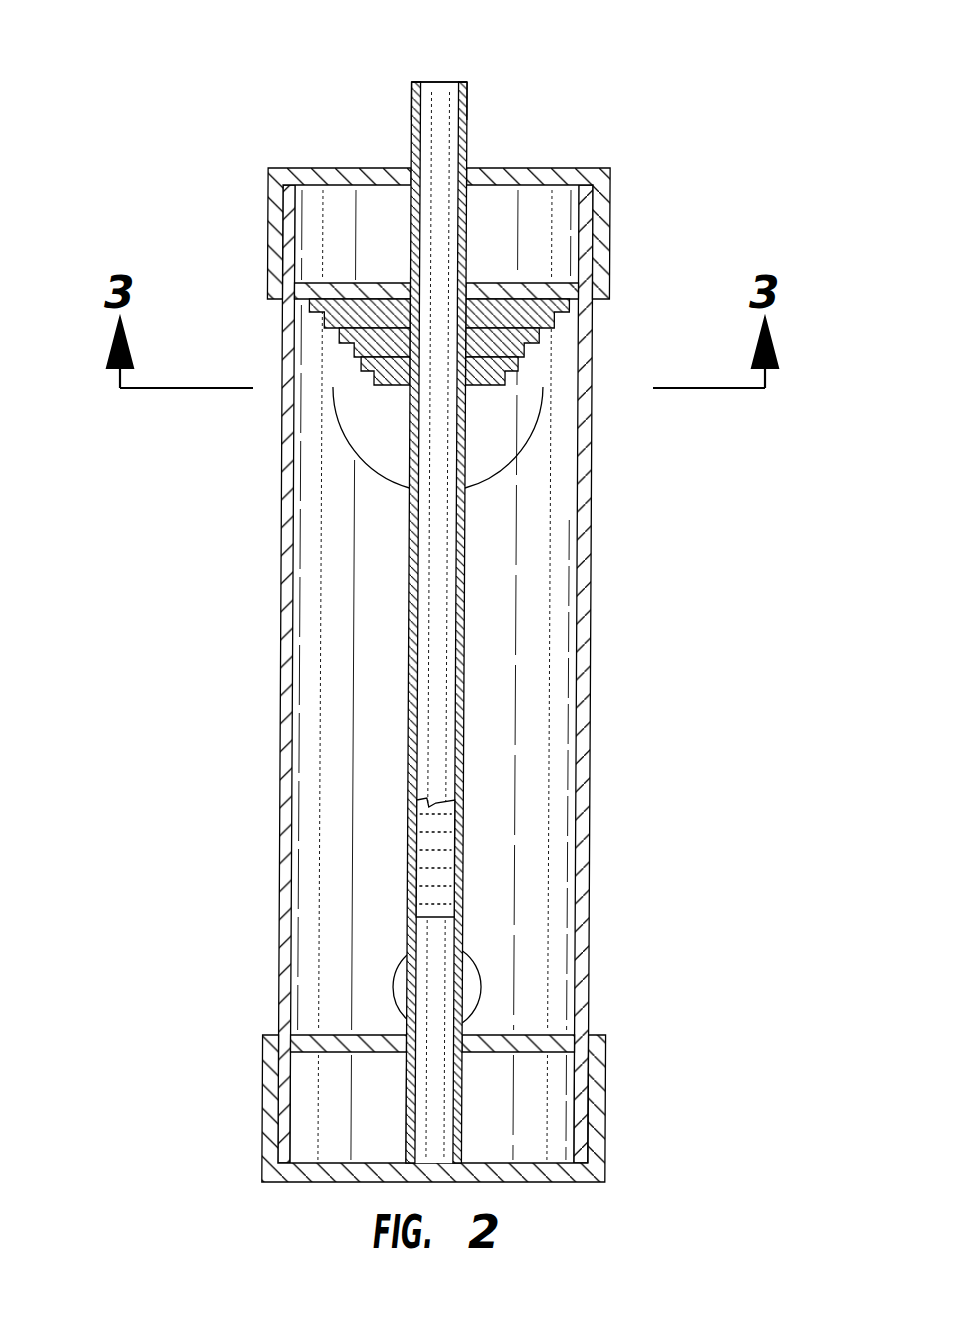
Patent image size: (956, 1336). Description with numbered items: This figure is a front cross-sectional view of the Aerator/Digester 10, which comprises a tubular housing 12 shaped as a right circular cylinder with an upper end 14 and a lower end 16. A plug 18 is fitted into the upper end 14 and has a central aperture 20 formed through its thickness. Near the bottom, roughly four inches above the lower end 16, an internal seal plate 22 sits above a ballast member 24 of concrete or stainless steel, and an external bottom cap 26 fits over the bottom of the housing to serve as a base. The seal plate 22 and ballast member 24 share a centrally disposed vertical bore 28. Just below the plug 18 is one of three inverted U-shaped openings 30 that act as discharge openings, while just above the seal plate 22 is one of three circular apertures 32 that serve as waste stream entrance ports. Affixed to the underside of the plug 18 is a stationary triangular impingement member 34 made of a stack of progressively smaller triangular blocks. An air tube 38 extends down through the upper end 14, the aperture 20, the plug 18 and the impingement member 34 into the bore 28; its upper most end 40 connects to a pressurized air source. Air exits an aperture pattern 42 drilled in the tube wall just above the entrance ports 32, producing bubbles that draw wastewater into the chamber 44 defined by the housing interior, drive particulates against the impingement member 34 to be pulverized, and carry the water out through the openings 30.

The Aerator/Digester 10 is at (178, 190).
The tubular housing 12 is at (594, 868).
The upper end 14 is at (610, 198).
The lower end 16 is at (583, 1163).
The plug 18 is at (528, 205).
The aperture 20 is at (408, 215).
The internal seal plate 22 is at (333, 1033).
The ballast member 24 is at (318, 1077).
The external bottom cap 26 is at (607, 1111).
The vertical bore 28 is at (405, 1108).
The inverted U-shaped opening 30 is at (343, 437).
The circular aperture 32 is at (477, 988).
The triangular impingement member 34 is at (508, 373).
The air tube 38 is at (466, 523).
The upper most end 40 is at (448, 80).
The aperture pattern 42 is at (462, 830).
The chamber 44 is at (327, 758).